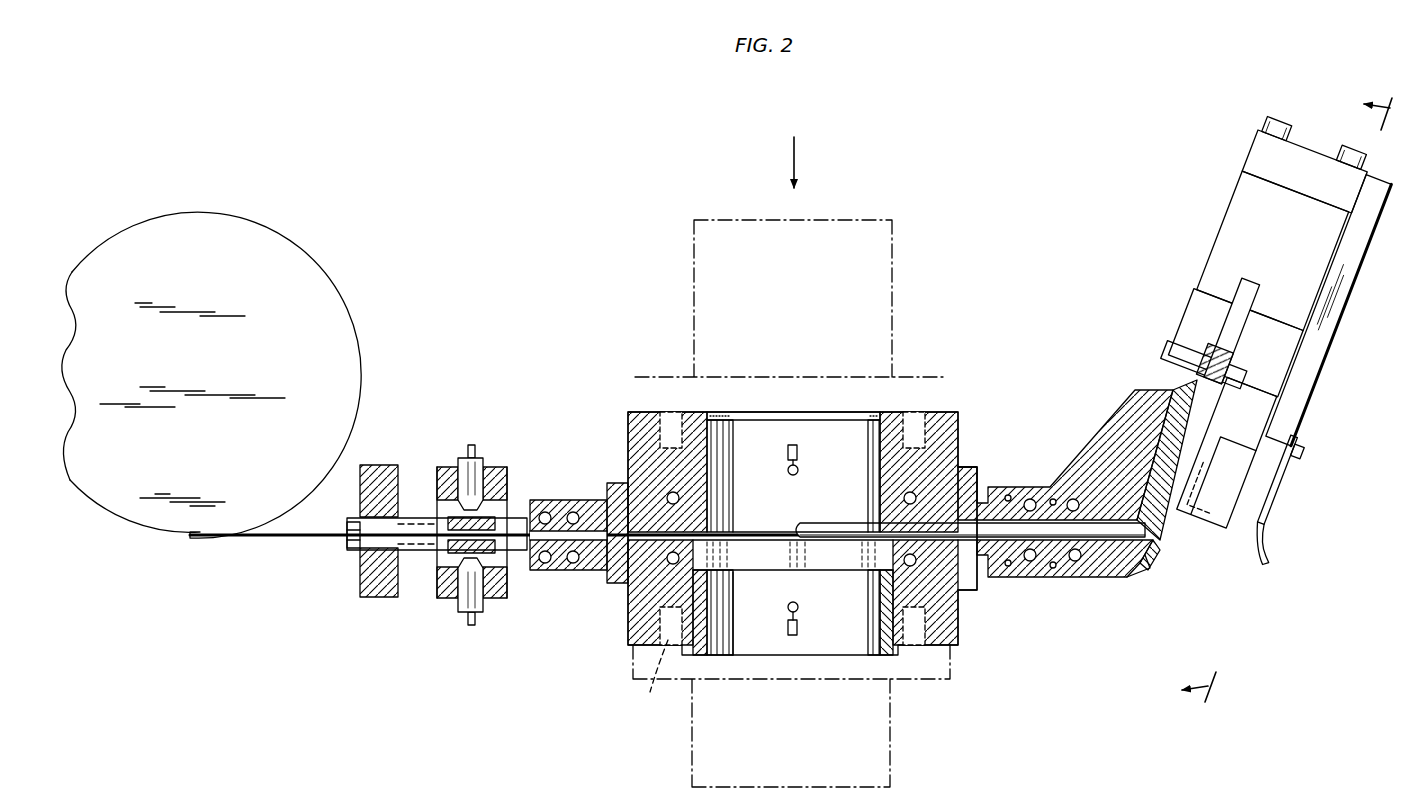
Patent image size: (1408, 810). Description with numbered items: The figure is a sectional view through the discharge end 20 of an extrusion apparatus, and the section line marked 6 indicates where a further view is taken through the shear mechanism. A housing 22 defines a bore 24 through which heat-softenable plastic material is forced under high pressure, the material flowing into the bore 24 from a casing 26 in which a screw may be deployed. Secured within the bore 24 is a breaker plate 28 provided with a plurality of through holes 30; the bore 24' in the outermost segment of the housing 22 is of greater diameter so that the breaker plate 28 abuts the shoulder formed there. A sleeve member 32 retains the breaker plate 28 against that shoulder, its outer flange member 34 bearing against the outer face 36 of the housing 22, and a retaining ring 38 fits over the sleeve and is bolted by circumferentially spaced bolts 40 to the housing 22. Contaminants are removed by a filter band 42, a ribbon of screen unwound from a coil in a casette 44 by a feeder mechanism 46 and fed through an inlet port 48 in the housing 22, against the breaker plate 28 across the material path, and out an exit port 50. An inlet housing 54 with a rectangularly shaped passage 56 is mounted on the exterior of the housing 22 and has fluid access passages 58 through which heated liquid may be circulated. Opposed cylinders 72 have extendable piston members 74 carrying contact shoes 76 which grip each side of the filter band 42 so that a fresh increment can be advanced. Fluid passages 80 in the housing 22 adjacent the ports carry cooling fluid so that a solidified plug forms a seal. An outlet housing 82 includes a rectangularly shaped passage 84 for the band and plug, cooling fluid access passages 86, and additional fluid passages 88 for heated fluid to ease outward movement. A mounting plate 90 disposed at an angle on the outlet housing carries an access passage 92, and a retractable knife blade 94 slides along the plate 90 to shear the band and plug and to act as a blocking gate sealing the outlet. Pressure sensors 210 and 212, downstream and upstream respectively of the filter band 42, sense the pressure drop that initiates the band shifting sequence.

The discharge end 20 is at (960, 640).
The housing 22 is at (962, 412).
The bore 24 is at (793, 456).
The bore in outermost segment 24' is at (737, 613).
The casing 26 is at (893, 244).
The breaker plate 28 is at (838, 568).
The through holes 30 is at (798, 570).
The sleeve member 32 is at (718, 650).
The outer flange member 34 is at (893, 650).
The outer face 36 is at (638, 650).
The retaining ring 38 is at (940, 682).
The bolts 40 is at (650, 681).
The filter band 42 is at (770, 530).
The casette 44 is at (318, 288).
The feeder mechanism 46 is at (506, 452).
The inlet port 48 is at (640, 522).
The exit port 50 is at (982, 580).
The inlet housing 54 is at (590, 572).
The rectangularly shaped passage 56 is at (590, 526).
The fluid access passages 58 is at (547, 511).
The cylinders 72 is at (462, 460).
The piston member 74 is at (488, 498).
The contact shoes 76 is at (450, 521).
The fluid passages 80 is at (678, 503).
The outlet housing 82 is at (996, 487).
The rectangularly shaped passage 84 is at (1090, 579).
The fluid access passages 86 is at (1008, 495).
The fluid passages 88 is at (1079, 502).
The mounting plate 90 is at (1127, 580).
The access passage 92 is at (1153, 562).
The knife blade 94 is at (1165, 538).
The pressure sensor 210 is at (798, 628).
The pressure sensor 212 is at (798, 452).
The section line 6- 6 is at (1281, 398).